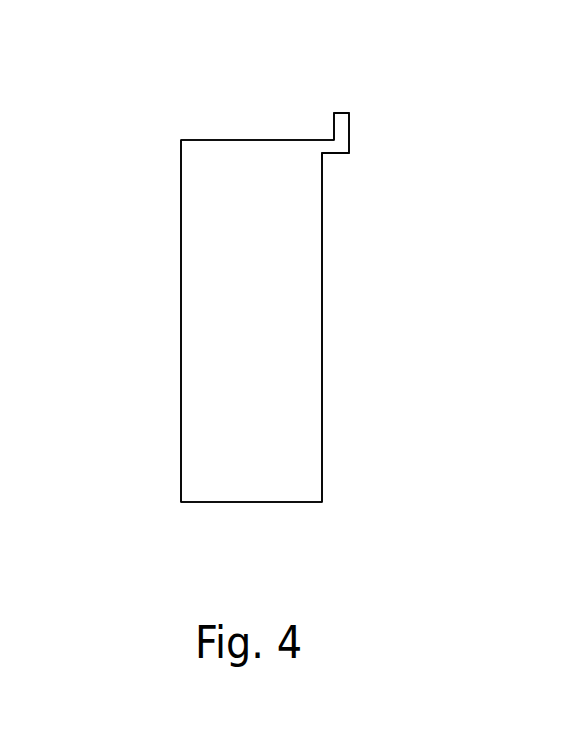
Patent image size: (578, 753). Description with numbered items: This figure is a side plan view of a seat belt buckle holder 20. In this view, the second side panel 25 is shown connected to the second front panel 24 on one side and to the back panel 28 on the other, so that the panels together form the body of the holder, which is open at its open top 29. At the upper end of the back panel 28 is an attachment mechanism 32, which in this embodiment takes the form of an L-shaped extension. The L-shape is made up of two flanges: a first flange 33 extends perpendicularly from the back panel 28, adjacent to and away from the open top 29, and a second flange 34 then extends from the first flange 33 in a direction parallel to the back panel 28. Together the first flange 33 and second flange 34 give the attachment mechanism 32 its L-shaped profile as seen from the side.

The seat belt buckle holder 20 is at (157, 130).
The second front panel 24 is at (181, 312).
The second side panel 25 is at (226, 438).
The back panel 28 is at (322, 365).
The open top 29 is at (280, 140).
The attachment mechanism 32 is at (378, 128).
The first flange 33 is at (333, 153).
The second flange 34 is at (349, 120).